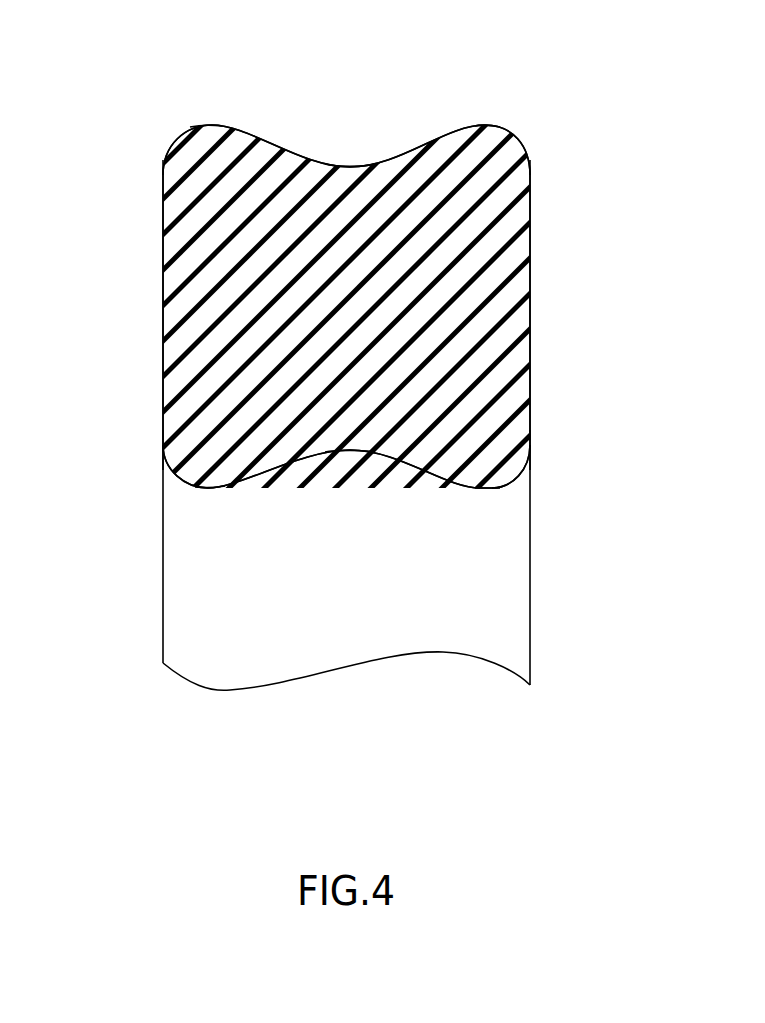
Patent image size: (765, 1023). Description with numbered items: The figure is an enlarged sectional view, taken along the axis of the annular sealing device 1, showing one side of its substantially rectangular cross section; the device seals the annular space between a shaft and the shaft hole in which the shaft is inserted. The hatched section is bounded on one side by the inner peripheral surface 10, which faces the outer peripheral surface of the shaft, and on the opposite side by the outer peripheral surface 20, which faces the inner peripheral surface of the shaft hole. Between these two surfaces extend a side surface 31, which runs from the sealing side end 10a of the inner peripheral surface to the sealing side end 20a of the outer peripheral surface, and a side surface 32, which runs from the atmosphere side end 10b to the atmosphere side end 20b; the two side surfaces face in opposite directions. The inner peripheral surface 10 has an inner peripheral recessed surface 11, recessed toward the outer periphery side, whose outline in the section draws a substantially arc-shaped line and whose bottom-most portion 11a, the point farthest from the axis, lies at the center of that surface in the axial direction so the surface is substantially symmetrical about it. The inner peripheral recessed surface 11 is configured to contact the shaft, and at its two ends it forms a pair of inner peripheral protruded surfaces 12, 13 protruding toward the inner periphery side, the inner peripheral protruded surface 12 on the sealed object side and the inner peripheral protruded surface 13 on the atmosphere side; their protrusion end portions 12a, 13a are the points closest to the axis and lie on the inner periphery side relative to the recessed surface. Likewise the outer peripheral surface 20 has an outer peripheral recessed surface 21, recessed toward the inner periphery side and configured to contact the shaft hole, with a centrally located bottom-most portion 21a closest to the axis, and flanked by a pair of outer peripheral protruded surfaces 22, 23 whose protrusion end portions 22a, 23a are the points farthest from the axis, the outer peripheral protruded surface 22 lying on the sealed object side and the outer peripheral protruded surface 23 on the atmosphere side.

The sealing device 1 is at (333, 797).
The inner peripheral surface 10 is at (398, 489).
The sealing side end 10a is at (533, 442).
The atmosphere side end 10b is at (162, 442).
The inner peripheral recessed surface 11 is at (306, 465).
The bottom-most portion 11a is at (352, 450).
The inner peripheral protruded surface 12 is at (518, 491).
The protrusion end portion 12a is at (495, 488).
The inner peripheral protruded surface 13 is at (181, 489).
The protrusion end portion 13a is at (190, 490).
The outer peripheral surface 20 is at (400, 125).
The sealing side end 20a is at (532, 170).
The atmosphere side end 20b is at (163, 170).
The outer peripheral recessed surface 21 is at (307, 151).
The bottom-most portion 21a is at (352, 168).
The outer peripheral protruded surface 22 is at (518, 128).
The protrusion end portion 22a is at (498, 127).
The outer peripheral protruded surface 23 is at (179, 132).
The protrusion end portion 23a is at (194, 128).
The side surface 31 is at (530, 282).
The side surface 32 is at (163, 292).